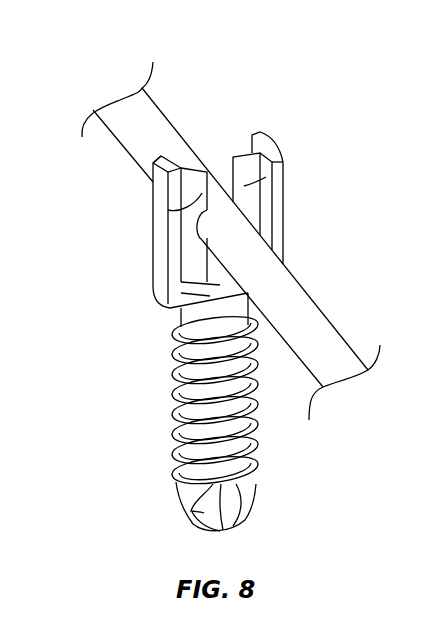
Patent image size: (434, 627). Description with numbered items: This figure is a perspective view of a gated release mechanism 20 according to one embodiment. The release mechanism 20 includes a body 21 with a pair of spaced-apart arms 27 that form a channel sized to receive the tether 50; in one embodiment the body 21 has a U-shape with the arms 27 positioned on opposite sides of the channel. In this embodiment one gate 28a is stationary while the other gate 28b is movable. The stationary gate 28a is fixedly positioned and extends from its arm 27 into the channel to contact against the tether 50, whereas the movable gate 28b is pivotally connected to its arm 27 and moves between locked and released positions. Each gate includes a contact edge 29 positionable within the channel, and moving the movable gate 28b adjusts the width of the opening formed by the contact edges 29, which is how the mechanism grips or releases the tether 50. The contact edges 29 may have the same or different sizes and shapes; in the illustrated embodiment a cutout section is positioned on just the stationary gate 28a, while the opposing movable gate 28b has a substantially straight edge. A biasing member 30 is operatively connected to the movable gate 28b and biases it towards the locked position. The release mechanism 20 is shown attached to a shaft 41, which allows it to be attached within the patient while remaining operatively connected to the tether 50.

The release mechanism 20 is at (254, 91).
The body 21 is at (158, 248).
The arms 27 is at (283, 215).
The stationary gate 28a is at (168, 210).
The movable gate 28b is at (273, 163).
The contact edge 29 is at (197, 233).
The biasing member 30 is at (163, 158).
The shaft 41 is at (210, 443).
The tether 50 is at (318, 332).